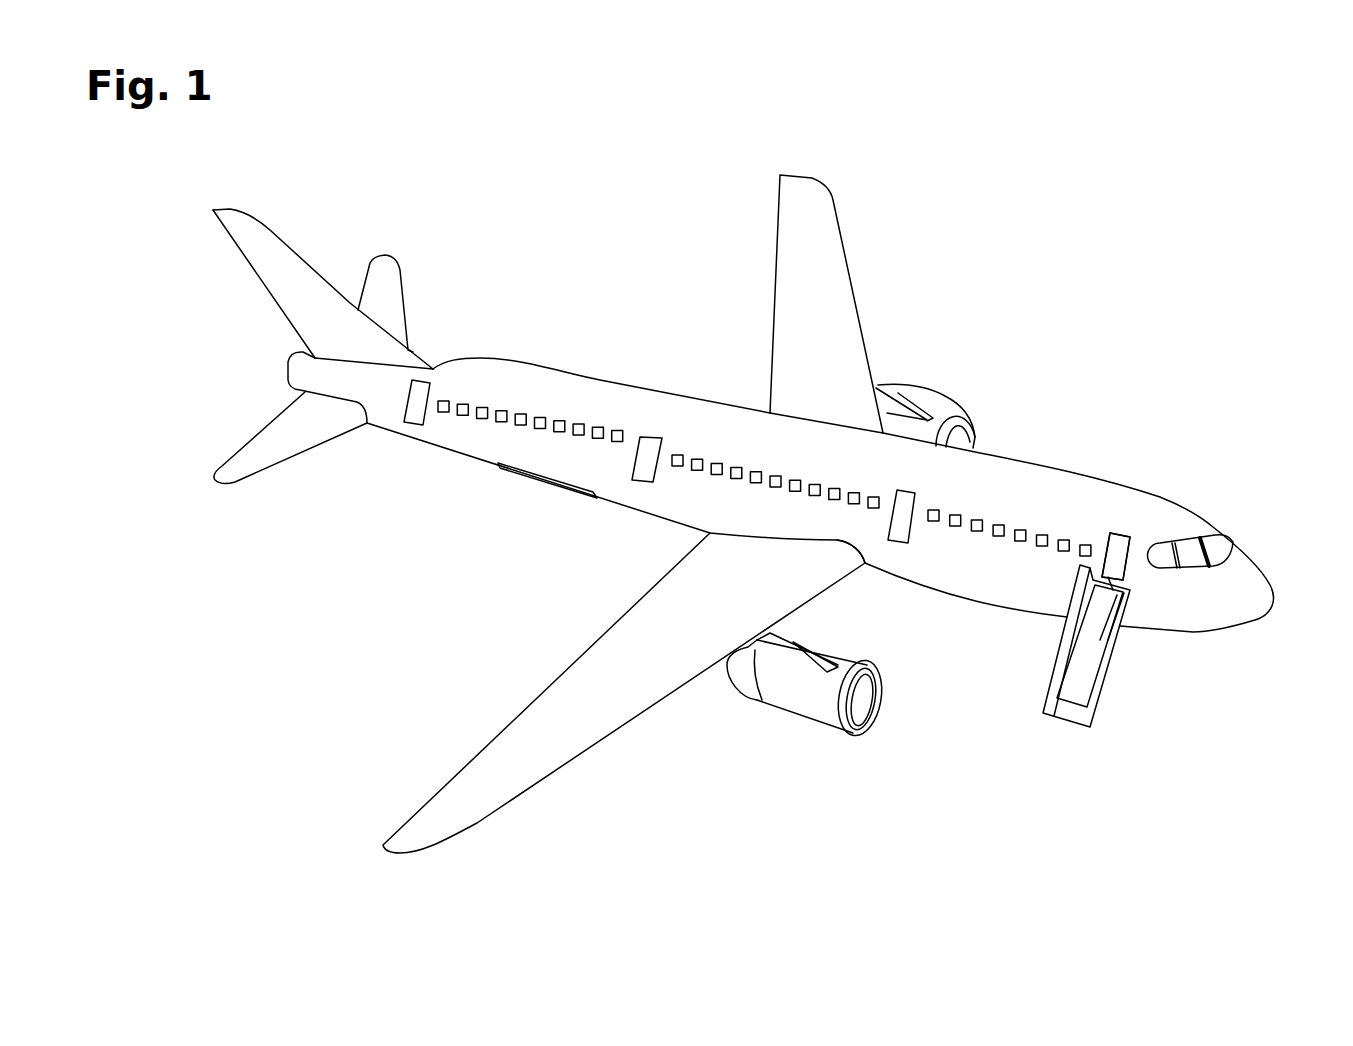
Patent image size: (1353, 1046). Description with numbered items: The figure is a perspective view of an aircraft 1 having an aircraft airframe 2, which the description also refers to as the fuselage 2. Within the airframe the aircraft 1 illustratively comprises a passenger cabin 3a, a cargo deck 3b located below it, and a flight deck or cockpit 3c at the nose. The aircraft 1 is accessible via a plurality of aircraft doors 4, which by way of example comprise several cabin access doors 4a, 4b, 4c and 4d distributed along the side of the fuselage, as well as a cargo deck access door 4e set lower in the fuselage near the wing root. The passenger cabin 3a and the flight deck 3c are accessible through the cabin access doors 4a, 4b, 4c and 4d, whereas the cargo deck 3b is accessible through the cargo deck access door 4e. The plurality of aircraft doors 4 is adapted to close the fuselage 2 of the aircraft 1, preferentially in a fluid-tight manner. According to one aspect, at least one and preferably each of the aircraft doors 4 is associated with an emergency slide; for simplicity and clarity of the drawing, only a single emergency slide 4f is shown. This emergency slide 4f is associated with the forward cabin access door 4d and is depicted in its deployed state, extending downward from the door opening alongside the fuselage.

The aircraft 1 is at (1148, 351).
The aircraft airframe 2 is at (560, 403).
The passenger cabin 3a is at (991, 543).
The cargo deck 3b is at (878, 558).
The flight deck or cockpit 3c is at (1228, 529).
The aircraft doors 4 is at (1141, 582).
The cabin access door 4a is at (418, 394).
The cabin access door 4b is at (647, 452).
The cabin access door 4c is at (905, 503).
The cabin access door 4d is at (1118, 548).
The cargo deck access door 4e is at (535, 487).
The emergency slide 4f is at (1063, 712).